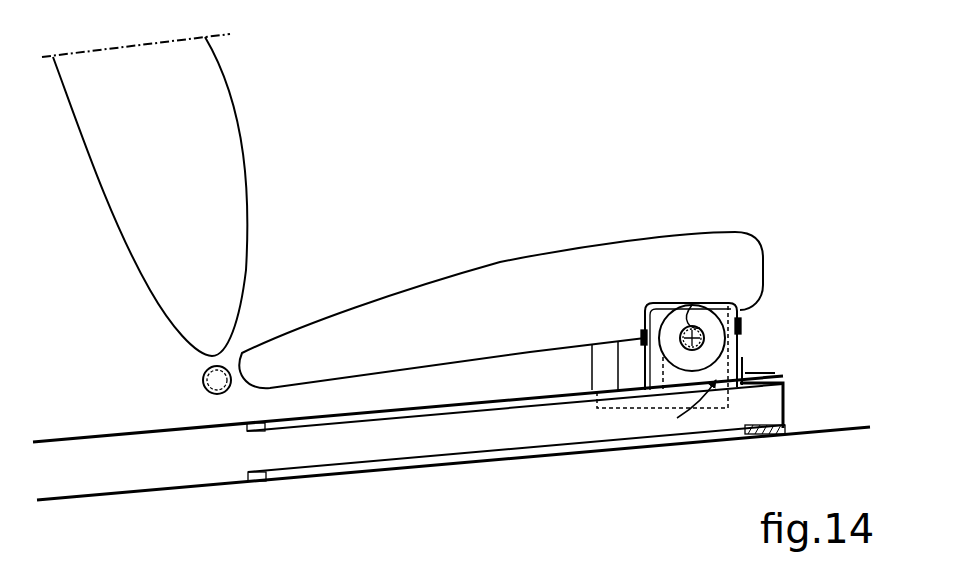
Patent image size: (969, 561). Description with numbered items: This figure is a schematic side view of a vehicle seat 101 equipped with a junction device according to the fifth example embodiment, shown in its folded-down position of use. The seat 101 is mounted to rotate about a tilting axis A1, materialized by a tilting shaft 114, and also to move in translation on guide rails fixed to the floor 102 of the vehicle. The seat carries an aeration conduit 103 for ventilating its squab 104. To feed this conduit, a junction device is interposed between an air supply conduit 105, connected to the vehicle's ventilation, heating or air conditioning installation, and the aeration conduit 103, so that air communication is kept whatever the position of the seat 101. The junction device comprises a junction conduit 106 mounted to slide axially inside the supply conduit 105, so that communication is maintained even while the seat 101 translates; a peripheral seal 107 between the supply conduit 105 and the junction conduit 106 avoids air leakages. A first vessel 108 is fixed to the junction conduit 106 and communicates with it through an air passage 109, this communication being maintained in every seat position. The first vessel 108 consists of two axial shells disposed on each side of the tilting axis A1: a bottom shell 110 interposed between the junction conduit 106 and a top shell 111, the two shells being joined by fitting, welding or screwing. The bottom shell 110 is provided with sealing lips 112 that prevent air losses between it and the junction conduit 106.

The seat 101 is at (382, 198).
The floor 102 is at (847, 427).
The aeration conduit 103 is at (588, 350).
The squab 104 is at (535, 314).
The air supply conduit 105 is at (175, 470).
The junction conduit 106 is at (432, 442).
The peripheral seal 107 is at (267, 482).
The first vessel 108 is at (758, 329).
The air passage 109 is at (677, 418).
The bottom shell 110 is at (632, 357).
The top shell 111 is at (680, 304).
The sealing lips 112 is at (745, 357).
The tilting shaft 114 is at (700, 303).
The tilting axis A1 is at (712, 326).